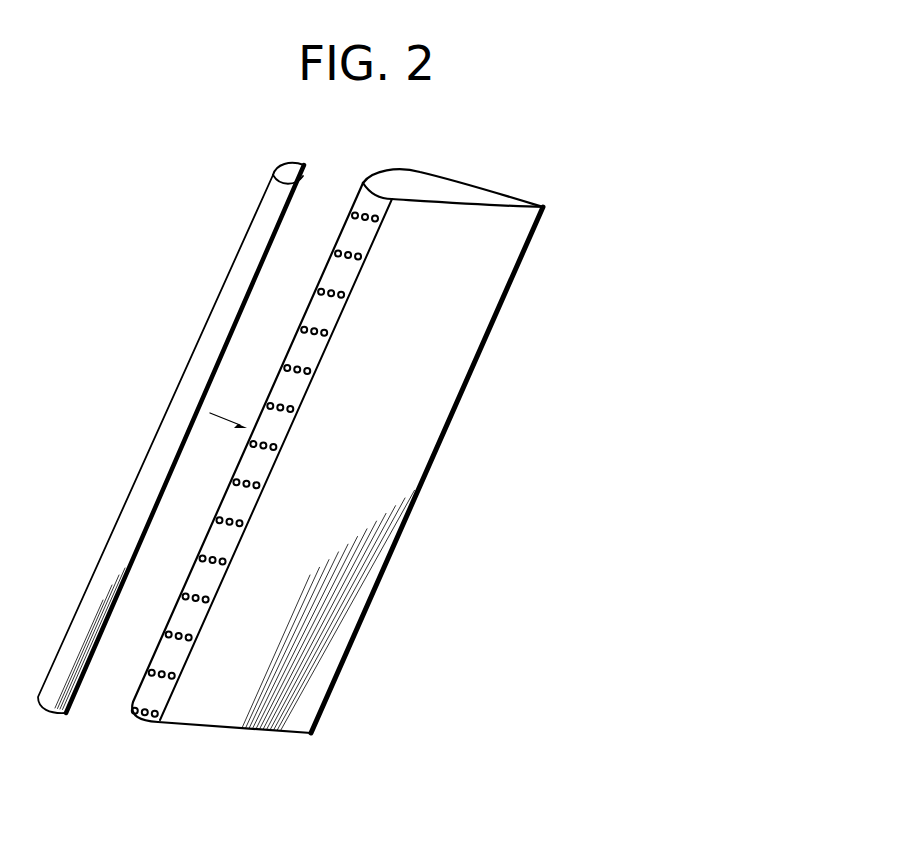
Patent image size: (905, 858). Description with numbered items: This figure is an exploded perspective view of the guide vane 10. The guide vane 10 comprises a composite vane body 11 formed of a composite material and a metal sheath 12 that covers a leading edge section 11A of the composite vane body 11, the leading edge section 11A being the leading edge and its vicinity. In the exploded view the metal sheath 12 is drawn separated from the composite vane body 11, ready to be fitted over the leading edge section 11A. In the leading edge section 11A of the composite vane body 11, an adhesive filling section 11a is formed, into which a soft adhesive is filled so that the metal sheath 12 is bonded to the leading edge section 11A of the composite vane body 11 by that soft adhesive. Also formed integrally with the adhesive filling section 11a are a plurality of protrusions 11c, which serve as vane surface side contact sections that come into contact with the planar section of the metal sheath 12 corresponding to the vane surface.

The guide vane 10 is at (549, 256).
The composite vane body 11 is at (400, 422).
The leading edge section 11A is at (344, 233).
The adhesive filling section 11a is at (260, 462).
The protrusions 11c is at (342, 292).
The metal sheath 12 is at (198, 365).